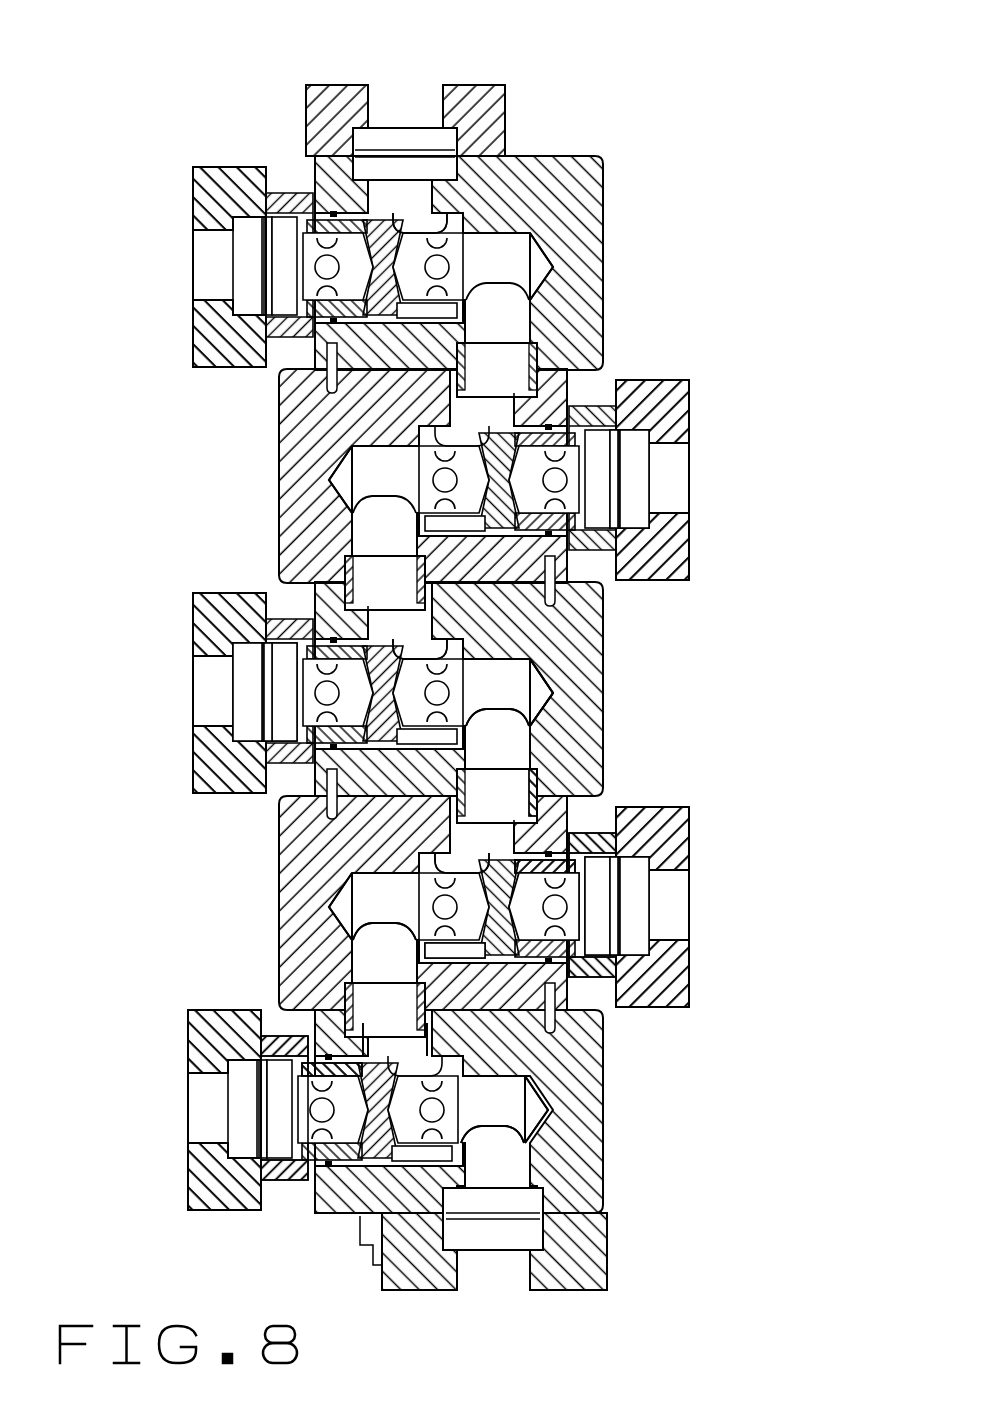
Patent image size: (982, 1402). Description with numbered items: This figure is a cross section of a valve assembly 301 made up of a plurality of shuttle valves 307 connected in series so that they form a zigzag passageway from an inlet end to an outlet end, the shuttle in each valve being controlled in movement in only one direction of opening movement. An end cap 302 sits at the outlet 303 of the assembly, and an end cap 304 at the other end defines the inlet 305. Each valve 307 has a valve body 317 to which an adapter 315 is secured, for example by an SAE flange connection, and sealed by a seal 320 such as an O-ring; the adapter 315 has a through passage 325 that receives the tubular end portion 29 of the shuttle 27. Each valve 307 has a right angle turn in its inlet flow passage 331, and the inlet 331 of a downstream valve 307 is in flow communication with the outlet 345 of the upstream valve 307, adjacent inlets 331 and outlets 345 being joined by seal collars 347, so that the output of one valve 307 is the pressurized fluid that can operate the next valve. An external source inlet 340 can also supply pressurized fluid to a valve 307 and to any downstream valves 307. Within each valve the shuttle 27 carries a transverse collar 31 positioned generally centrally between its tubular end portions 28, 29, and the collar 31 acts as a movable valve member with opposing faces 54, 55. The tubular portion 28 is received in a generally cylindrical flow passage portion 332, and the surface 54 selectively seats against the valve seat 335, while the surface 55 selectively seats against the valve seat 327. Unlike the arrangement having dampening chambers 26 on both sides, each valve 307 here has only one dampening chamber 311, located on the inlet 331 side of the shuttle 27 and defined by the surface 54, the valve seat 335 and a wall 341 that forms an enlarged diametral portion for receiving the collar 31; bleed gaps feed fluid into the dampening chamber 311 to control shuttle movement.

The valve assembly 301 is at (603, 120).
The end cap 302 is at (482, 85).
The outlet 303 is at (398, 85).
The end cap 304 is at (608, 1262).
The inlet 305 is at (494, 1291).
The valve 307 is at (618, 252).
The dampening chamber 311 is at (437, 436).
The adapter 315 is at (575, 995).
The valve body 317 is at (276, 858).
The seal 320 is at (553, 835).
The through passage 325 is at (560, 885).
The valve seat 327 is at (507, 1115).
The inlet flow passage 331 is at (492, 353).
The flow passage portion 332 is at (505, 677).
The valve seat 335 is at (427, 960).
The external source inlet 340 is at (193, 262).
The wall 341 is at (417, 867).
The outlet 345 is at (327, 1072).
The seal collar 347 is at (565, 795).
The dampening chamber 26 is at (450, 217).
The shuttle 27 is at (297, 680).
The tubular end portion 28 is at (468, 652).
The tubular end portion 29 is at (588, 468).
The collar 31 is at (382, 638).
The face 54 is at (367, 1043).
The face 55 is at (548, 1008).